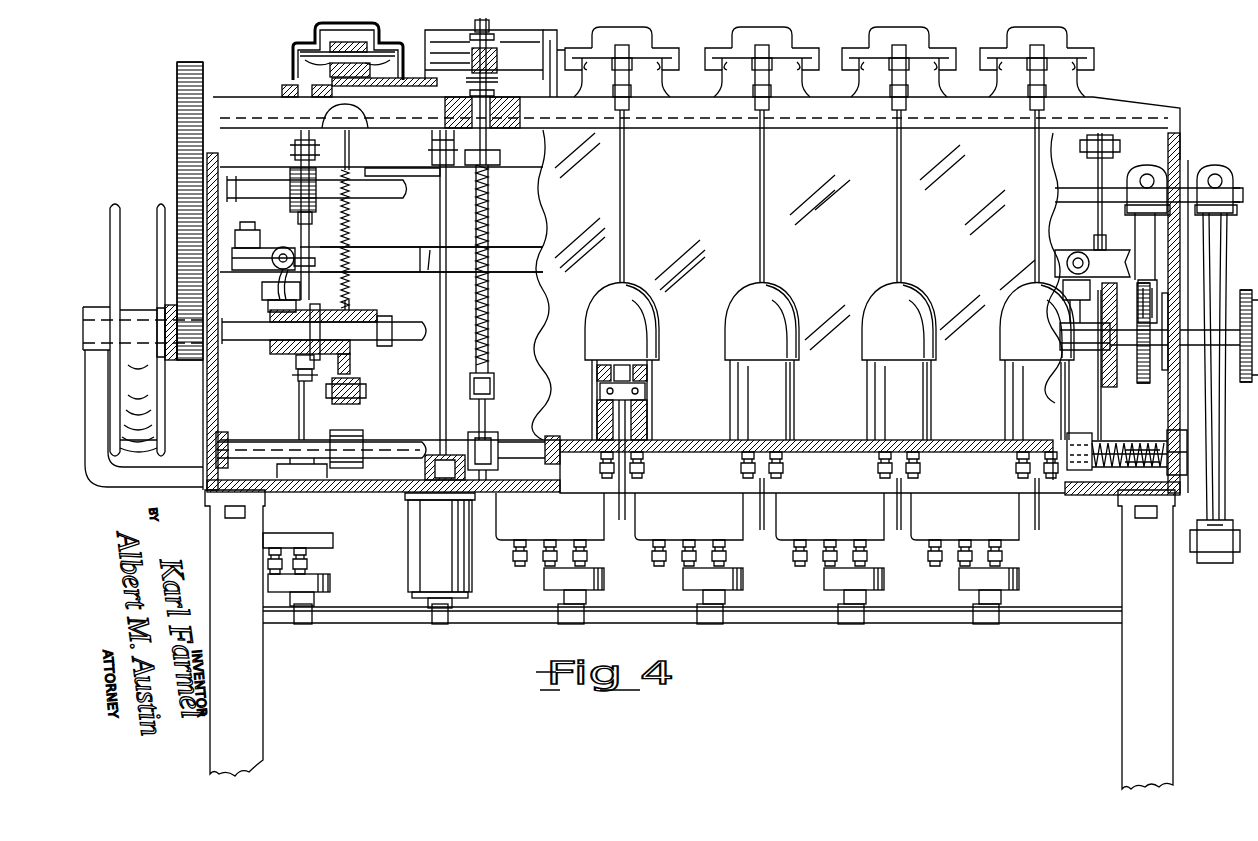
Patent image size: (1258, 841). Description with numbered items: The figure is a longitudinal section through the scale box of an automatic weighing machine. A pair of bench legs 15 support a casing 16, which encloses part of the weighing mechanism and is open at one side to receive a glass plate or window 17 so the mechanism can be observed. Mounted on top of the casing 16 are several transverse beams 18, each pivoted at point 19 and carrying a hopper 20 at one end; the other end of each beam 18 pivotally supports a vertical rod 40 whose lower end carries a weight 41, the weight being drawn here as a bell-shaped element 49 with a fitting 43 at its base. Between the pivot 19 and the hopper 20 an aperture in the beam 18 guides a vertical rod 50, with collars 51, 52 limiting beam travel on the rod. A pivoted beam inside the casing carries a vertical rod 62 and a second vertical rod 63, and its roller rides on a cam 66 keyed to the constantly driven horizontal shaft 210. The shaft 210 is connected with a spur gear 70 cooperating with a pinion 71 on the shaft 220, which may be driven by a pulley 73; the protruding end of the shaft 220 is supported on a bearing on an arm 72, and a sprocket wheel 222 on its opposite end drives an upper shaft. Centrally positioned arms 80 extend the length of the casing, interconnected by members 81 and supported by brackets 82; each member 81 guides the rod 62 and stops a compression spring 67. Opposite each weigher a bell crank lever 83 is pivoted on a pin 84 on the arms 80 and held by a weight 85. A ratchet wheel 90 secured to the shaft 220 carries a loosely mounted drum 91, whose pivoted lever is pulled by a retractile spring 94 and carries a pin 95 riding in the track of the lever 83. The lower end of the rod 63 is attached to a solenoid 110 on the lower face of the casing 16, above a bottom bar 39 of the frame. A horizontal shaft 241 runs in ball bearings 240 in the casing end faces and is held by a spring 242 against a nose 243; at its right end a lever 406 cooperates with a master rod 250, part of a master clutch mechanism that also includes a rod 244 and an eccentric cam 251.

The bench legs 15 is at (262, 656).
The casing 16 is at (358, 500).
The glass plate or window 17 is at (545, 207).
The transverse beam 18 is at (500, 32).
The pivot point 19 is at (420, 45).
The hopper 20 is at (550, 40).
The bottom bar 39 is at (620, 455).
The vertical rod 40 is at (620, 197).
The weight 41 is at (592, 375).
The valve plate 43 is at (640, 400).
The bell float 49 is at (640, 300).
The vertical rod 50 is at (490, 320).
The collar 51 is at (475, 25).
The collar 52 is at (480, 80).
The vertical rod 62 is at (312, 180).
The second vertical rod 63 is at (440, 368).
The cam 66 is at (290, 178).
The compression spring 67 is at (312, 218).
The spur gear 70 is at (177, 98).
The pinion 71 is at (175, 360).
The arm 72 is at (115, 480).
The pulley 73 is at (135, 215).
The supporting arms 80 is at (383, 280).
The member 81 is at (348, 242).
The bracket 82 is at (270, 235).
The bell crank lever 83 is at (315, 268).
The pin 84 is at (290, 252).
The weight 85 is at (268, 300).
The ratchet wheel 90 is at (295, 365).
The drum 91 is at (307, 405).
The retractile spring 94 is at (300, 375).
The pin 95 is at (262, 290).
The solenoid 110 is at (333, 560).
The horizontal shaft 210 is at (380, 210).
The shaft 220 is at (270, 338).
The sprocket wheel 222 is at (1232, 395).
The ball bearings 240 is at (225, 433).
The horizontal shaft 241 is at (404, 427).
The spring 242 is at (1126, 470).
The nose 243 is at (1092, 425).
The rod 244 is at (1098, 218).
The master rod 250 is at (1096, 395).
The eccentric cam 251 is at (1145, 390).
The lever 406 is at (1098, 480).